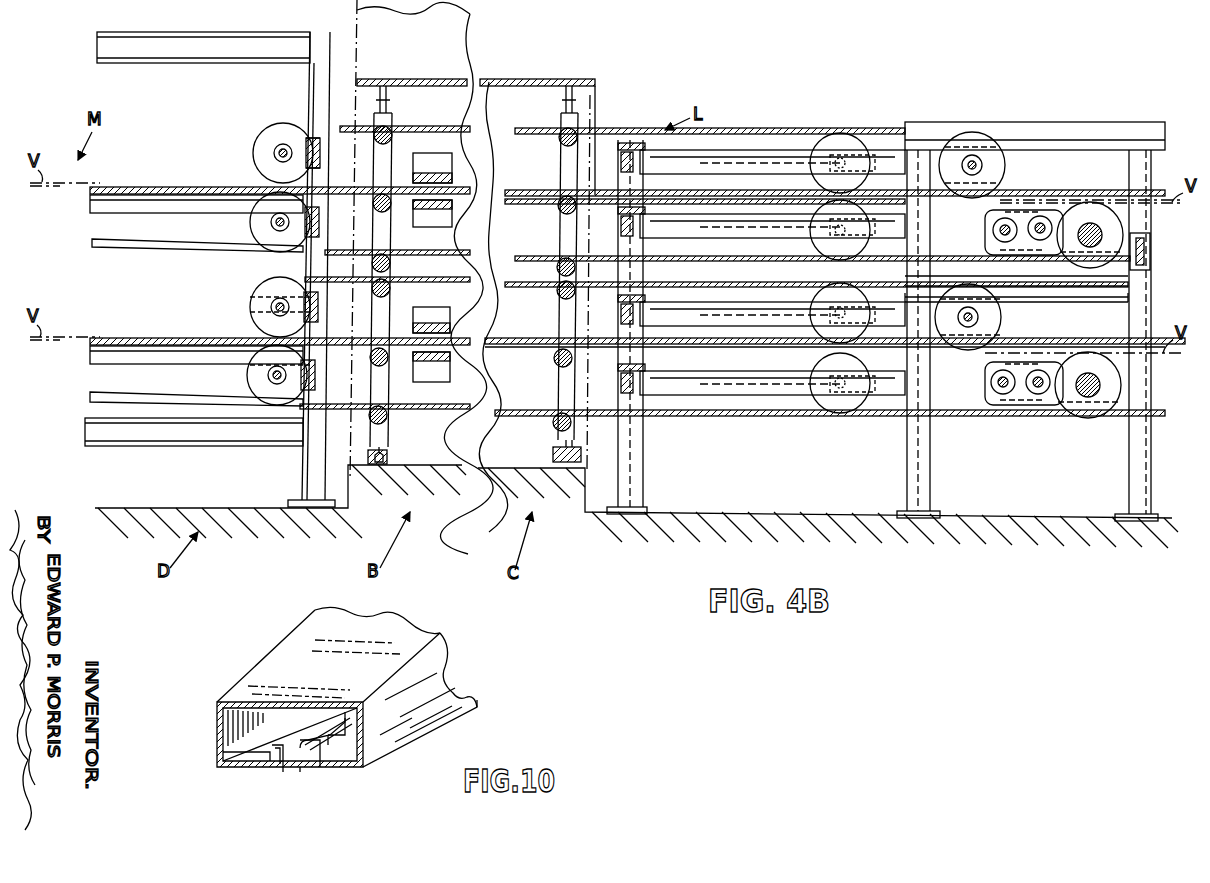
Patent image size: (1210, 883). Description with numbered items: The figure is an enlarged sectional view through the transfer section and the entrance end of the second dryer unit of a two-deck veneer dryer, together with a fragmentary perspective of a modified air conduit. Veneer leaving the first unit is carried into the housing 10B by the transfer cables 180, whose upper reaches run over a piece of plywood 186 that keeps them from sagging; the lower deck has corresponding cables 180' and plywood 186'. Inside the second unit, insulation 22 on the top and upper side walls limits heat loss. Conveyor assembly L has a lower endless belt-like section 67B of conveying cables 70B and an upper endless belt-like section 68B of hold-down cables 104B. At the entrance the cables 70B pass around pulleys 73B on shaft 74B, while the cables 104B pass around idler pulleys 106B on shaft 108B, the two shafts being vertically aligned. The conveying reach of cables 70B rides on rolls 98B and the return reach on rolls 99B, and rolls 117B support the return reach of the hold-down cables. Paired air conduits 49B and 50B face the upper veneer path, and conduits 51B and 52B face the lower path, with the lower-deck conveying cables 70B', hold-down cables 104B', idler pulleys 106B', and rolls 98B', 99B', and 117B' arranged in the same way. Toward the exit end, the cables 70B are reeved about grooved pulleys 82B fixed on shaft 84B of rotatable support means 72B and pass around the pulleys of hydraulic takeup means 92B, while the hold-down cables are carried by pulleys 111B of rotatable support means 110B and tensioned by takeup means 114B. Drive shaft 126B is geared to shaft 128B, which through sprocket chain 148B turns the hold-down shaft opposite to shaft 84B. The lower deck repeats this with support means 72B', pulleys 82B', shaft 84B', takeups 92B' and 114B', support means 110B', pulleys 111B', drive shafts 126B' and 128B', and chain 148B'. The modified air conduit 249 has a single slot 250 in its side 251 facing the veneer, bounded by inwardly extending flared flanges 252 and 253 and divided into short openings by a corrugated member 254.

In FIG. 4B, the housing 10B is at (360, 25).
In FIG. 4B, the insulation 22 is at (437, 80).
In FIG. 4B, the upper endless belt-like section 68B is at (292, 117).
In FIG. 4B, the idler pulley 106B is at (255, 150).
In FIG. 4B, the shaft 108B is at (274, 156).
In FIG. 4B, the cable 180 is at (280, 218).
In FIG. 4B, the plywood 186 is at (161, 212).
In FIG. 4B, the shaft 74B is at (262, 224).
In FIG. 4B, the pulley 73B is at (276, 242).
In FIG. 4B, the lower endless belt-like section 67B is at (350, 200).
In FIG. 4B, the roll 117B is at (475, 134).
In FIG. 4B, the endless hold-down member 104B is at (752, 175).
In FIG. 4B, the conduit 49B is at (455, 153).
In FIG. 4B, the roll 98B is at (493, 224).
In FIG. 4B, the conduit 50B is at (440, 224).
In FIG. 4B, the roll 99B is at (473, 281).
In FIG. 4B, the conduit 51B is at (437, 318).
In FIG. 4B, the conduit 52B is at (436, 372).
In FIG. 4B, the idler pulley 106B' is at (250, 307).
In FIG. 4B, the plywood 186' is at (196, 336).
In FIG. 4B, the cable 180' is at (280, 355).
In FIG. 4B, the roll 117B' is at (475, 301).
In FIG. 4B, the roll 98B' is at (470, 368).
In FIG. 4B, the rotatable support means 72B' is at (252, 375).
In FIG. 4B, the roll 99B' is at (450, 425).
In FIG. 4B, the endless hold-down member 104B' is at (745, 338).
In FIG. 4B, the endless conveying member 70B is at (697, 217).
In FIG. 4B, the endless conveying member 70B' is at (821, 401).
In FIG. 4B, the takeup means 114B is at (761, 140).
In FIG. 4B, the takeup means 92B is at (761, 219).
In FIG. 4B, the takeup means 114B' is at (761, 295).
In FIG. 4B, the takeup means 92B' is at (761, 402).
In FIG. 4B, the rotatable support means 110B is at (1035, 123).
In FIG. 4B, the pulley 111B is at (1005, 147).
In FIG. 4B, the sprocket chain 148B is at (1028, 203).
In FIG. 4B, the shaft 128B is at (1072, 201).
In FIG. 4B, the drive shaft 126B is at (1020, 260).
In FIG. 4B, the rotatable support means 72B is at (1156, 213).
In FIG. 4B, the pulley 82B is at (1126, 235).
In FIG. 4B, the shaft 84B is at (1136, 252).
In FIG. 4B, the rotatable support means 110B' is at (1016, 313).
In FIG. 4B, the pulley 111B' is at (1000, 317).
In FIG. 4B, the sprocket chain 148B' is at (1004, 410).
In FIG. 4B, the drive shaft 126B' is at (1018, 421).
In FIG. 4B, the shaft 128B' is at (1069, 414).
In FIG. 4B, the pulley 82B' is at (1125, 385).
In FIG. 4B, the shaft 84B' is at (1135, 400).
In FIG. 10, the air conduit 249 is at (282, 658).
In FIG. 10, the flange 252 is at (235, 755).
In FIG. 10, the corrugated member 254 is at (270, 763).
In FIG. 10, the side 251 is at (278, 768).
In FIG. 10, the slot 250 is at (295, 770).
In FIG. 10, the flange 253 is at (312, 760).